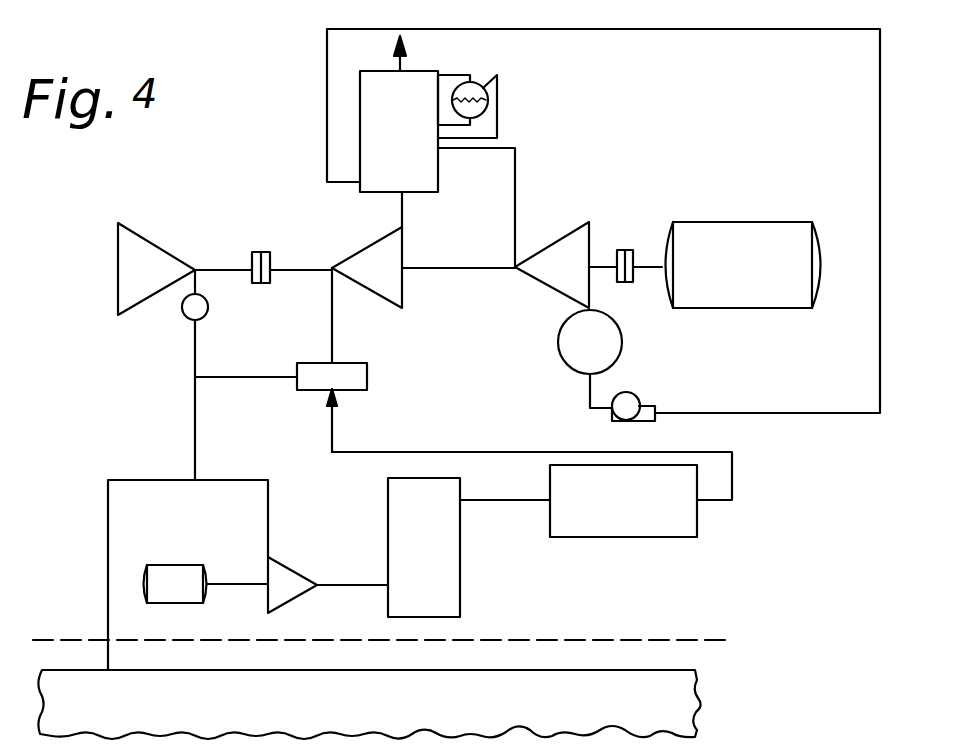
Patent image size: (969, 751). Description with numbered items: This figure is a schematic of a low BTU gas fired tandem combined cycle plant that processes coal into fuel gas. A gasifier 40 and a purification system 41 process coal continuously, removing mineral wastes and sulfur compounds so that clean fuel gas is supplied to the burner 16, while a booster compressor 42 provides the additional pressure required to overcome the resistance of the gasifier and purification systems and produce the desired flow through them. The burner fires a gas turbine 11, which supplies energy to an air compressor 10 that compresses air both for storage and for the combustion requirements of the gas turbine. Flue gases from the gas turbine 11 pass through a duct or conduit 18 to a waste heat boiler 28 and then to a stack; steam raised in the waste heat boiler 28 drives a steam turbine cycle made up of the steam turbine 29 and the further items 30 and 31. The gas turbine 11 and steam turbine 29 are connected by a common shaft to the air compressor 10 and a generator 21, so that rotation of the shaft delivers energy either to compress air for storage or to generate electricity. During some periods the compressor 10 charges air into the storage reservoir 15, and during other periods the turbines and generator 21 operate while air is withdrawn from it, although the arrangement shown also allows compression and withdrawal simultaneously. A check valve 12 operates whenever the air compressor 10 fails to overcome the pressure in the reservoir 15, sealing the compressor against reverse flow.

The air compressor 10 is at (160, 281).
The gas turbine 11 is at (392, 279).
The check valve 12 is at (183, 314).
The storage reservoir 15 is at (384, 706).
The burner 16 is at (368, 366).
The duct or conduit 18 is at (404, 204).
The generator 21 is at (755, 278).
The waste heat boiler 28 is at (410, 143).
The steam turbine 29 is at (580, 280).
The steam turbine cycle component 30 is at (606, 354).
The steam turbine cycle component 31 is at (640, 401).
The gasifier 40 is at (441, 558).
The purification system 41 is at (639, 514).
The booster compressor 42 is at (287, 572).